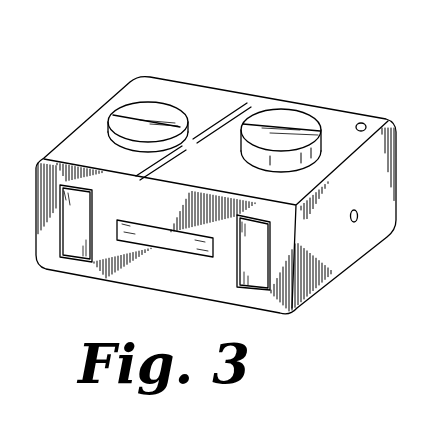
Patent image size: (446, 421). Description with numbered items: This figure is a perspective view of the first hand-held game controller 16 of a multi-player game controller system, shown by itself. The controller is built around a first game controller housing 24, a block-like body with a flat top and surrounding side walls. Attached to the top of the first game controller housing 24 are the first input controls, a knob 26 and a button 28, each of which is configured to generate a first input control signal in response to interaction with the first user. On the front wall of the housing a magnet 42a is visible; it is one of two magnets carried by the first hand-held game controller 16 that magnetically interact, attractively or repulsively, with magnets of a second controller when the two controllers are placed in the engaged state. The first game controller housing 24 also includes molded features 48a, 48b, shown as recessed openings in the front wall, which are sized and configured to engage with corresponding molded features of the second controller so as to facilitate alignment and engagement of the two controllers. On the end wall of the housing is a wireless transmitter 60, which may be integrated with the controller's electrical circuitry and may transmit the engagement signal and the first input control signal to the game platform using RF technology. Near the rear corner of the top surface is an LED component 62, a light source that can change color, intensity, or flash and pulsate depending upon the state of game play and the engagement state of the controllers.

The first hand-held game controller 16 is at (219, 70).
The first game controller housing 24 is at (195, 292).
The knob 26 is at (291, 118).
The button 28 is at (140, 110).
The magnet 42a is at (173, 243).
The molded feature 48a is at (70, 257).
The molded feature 48b is at (260, 273).
The wireless transmitter 60 is at (358, 218).
The LED component 62 is at (366, 124).